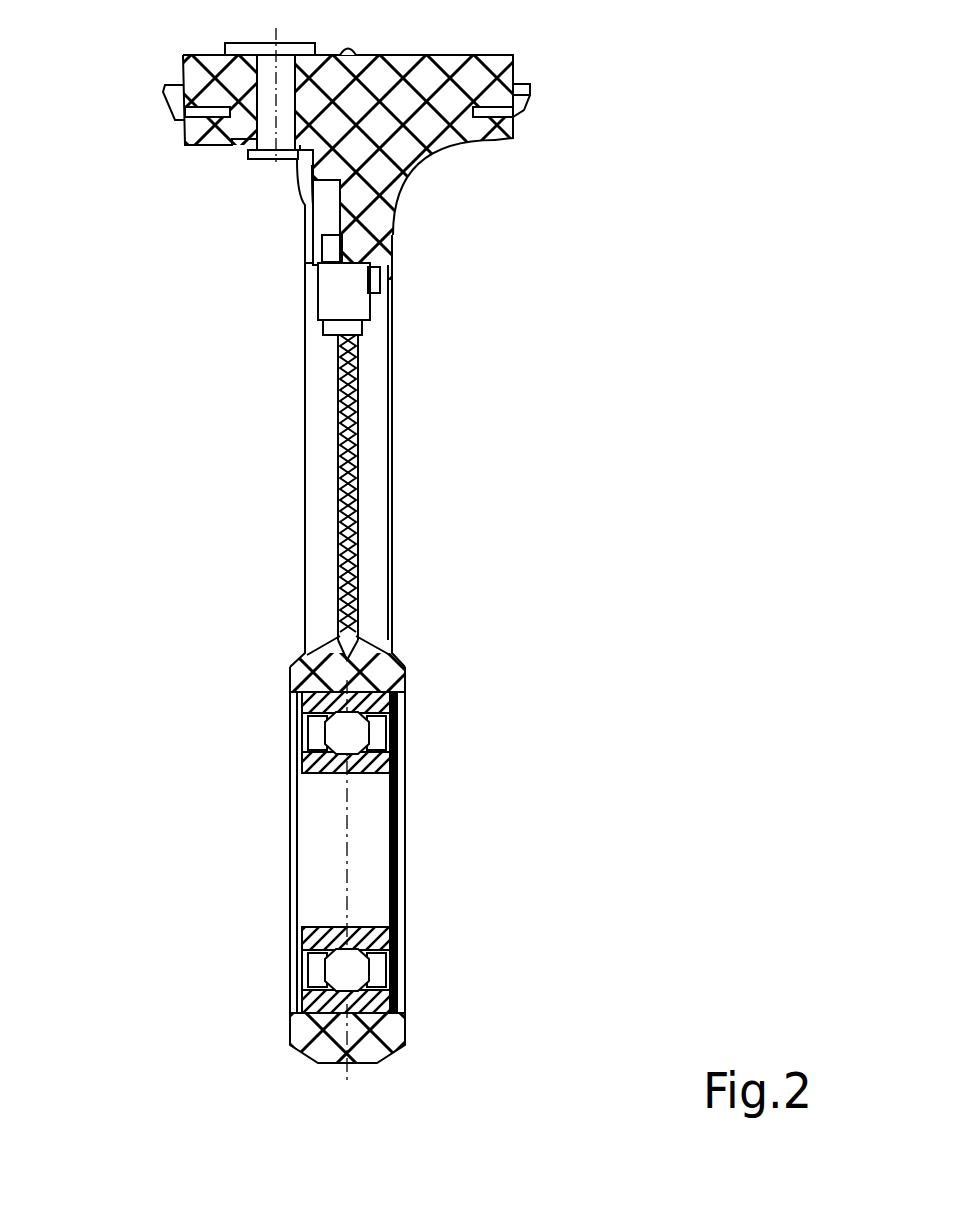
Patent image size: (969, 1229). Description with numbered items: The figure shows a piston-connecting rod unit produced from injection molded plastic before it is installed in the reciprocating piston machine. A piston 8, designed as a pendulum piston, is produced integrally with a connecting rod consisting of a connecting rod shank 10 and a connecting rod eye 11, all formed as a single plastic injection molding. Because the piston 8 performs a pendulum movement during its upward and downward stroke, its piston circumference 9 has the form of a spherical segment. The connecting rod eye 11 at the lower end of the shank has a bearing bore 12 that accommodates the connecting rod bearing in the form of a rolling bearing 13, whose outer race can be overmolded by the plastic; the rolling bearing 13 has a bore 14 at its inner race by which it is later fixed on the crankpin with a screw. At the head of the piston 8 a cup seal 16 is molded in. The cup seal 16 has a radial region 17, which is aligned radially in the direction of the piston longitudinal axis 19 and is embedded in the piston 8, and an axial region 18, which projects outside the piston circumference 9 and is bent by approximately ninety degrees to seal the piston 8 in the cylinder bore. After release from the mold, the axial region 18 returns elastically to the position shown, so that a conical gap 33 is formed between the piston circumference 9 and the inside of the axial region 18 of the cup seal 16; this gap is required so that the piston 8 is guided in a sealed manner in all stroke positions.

The piston 8 is at (192, 136).
The piston circumference 9 is at (514, 66).
The connecting rod shank 10 is at (360, 542).
The connecting rod eye 11 is at (367, 670).
The bearing bore 12 is at (365, 1000).
The rolling bearing 13 is at (412, 957).
The bore 14 is at (360, 774).
The cup seal 16 is at (542, 105).
The radial region 17 is at (516, 140).
The axial region 18 is at (530, 92).
The piston longitudinal axis 19 is at (350, 47).
The conical gap 33 is at (176, 70).